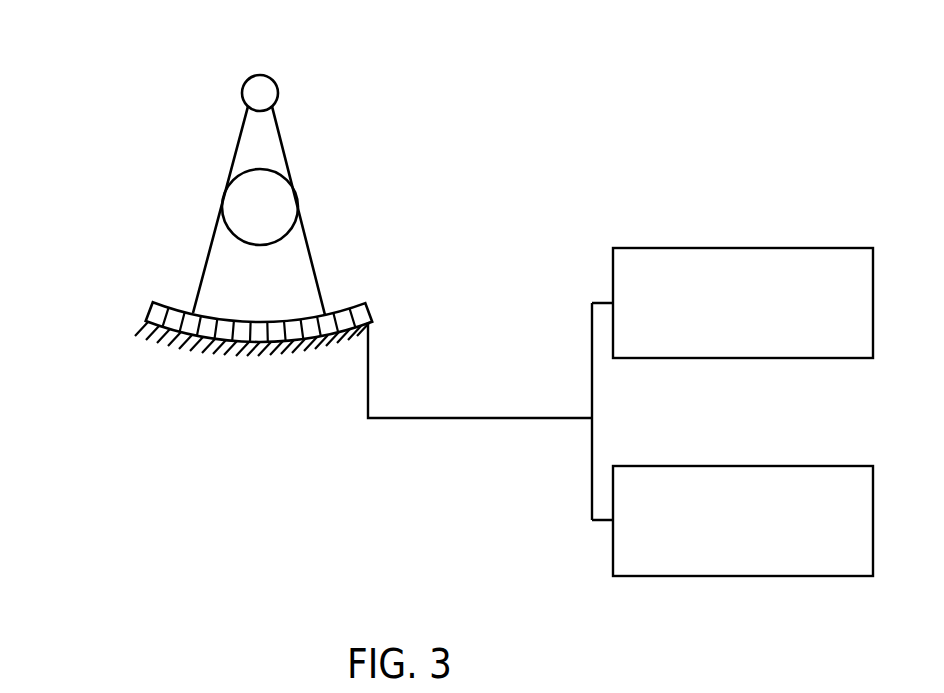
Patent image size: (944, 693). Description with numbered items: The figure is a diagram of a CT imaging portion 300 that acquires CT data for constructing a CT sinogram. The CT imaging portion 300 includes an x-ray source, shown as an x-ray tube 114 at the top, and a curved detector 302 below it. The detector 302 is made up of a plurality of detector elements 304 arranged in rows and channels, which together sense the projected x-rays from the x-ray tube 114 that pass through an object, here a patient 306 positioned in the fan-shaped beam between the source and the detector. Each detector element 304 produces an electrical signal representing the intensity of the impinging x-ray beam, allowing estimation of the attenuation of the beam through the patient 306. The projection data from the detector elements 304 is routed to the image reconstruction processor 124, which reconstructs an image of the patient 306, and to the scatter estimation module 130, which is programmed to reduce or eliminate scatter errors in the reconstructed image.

The CT imaging portion 300 is at (122, 66).
The x-ray tube 114 is at (267, 73).
The patient 306 is at (285, 215).
The detector elements 304 is at (138, 302).
The detector 302 is at (365, 347).
The image reconstruction processor 124 is at (712, 247).
The scatter estimation module 130 is at (712, 465).